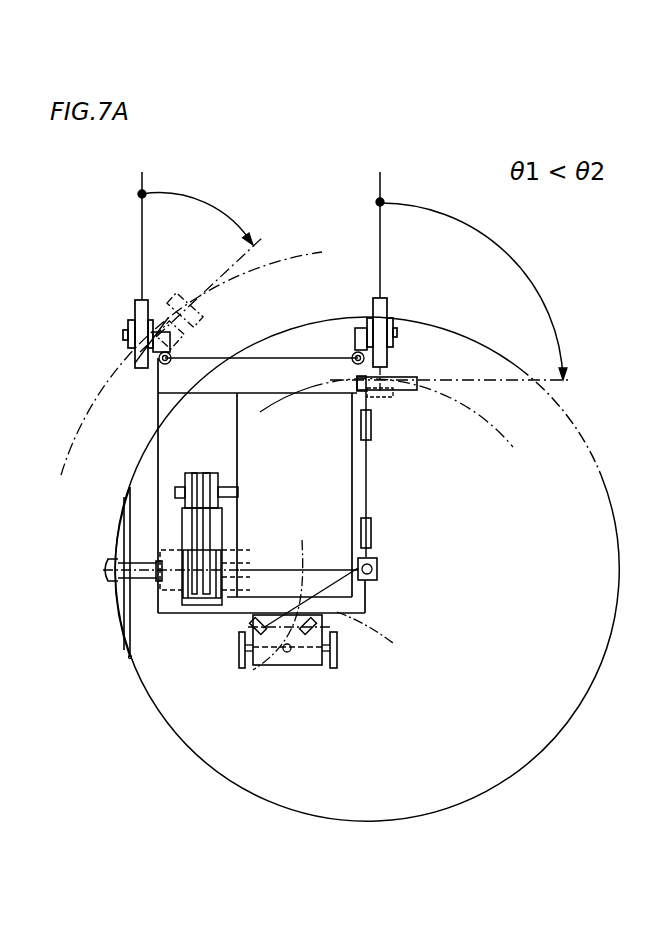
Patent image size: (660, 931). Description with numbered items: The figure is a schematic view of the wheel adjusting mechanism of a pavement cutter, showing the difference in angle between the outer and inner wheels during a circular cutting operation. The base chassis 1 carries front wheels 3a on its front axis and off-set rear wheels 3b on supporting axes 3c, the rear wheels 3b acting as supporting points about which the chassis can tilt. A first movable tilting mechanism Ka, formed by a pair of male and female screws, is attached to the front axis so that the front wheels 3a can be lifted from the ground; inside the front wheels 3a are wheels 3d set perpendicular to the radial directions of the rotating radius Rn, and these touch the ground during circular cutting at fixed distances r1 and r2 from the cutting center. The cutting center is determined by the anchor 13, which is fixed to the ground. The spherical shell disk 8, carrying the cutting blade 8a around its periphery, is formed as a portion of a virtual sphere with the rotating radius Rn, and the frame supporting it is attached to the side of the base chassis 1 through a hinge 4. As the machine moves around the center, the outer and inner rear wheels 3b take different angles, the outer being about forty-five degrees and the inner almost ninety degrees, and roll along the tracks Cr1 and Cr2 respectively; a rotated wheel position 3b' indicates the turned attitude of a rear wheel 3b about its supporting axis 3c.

The base chassis 1 is at (158, 378).
The front wheels 3a is at (237, 658).
The rear wheels 3b is at (266, 318).
The roller in rotated position 3b' is at (311, 316).
The supporting axes 3c is at (172, 363).
The circular cutting wheels 3d is at (258, 637).
The hinge 4 is at (372, 425).
The spherical shell disk 8 is at (117, 523).
The cutting blade 8a is at (130, 657).
The anchor 13 is at (372, 580).
The rolling track of outer wheel Cr1 is at (285, 263).
The rolling track of inner wheel Cr2 is at (488, 418).
The first movable tilting mechanism Ka is at (287, 652).
The rotating radius Rn is at (599, 470).
The distance of wheel 3d from center r1 is at (288, 600).
The distance of wheel 3d from center r2 is at (375, 630).